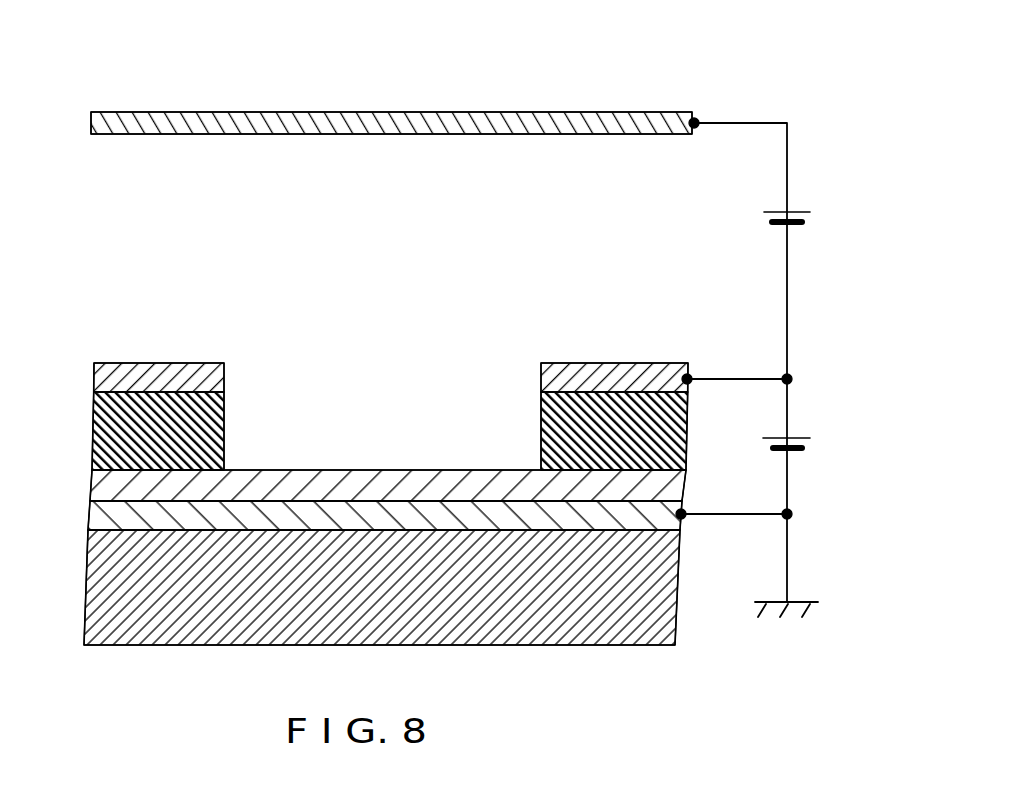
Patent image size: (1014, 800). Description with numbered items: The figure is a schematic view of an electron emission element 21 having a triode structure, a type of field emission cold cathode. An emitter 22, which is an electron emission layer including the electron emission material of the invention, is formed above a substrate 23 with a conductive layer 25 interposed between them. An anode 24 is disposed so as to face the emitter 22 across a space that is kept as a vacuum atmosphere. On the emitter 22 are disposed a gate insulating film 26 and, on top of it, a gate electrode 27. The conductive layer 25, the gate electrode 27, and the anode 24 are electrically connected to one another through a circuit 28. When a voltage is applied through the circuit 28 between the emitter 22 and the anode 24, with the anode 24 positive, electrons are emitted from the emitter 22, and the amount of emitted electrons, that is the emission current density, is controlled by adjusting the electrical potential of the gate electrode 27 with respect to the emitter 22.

The electron emission element 21 is at (738, 88).
The emitter 22 is at (110, 489).
The substrate 23 is at (108, 607).
The anode 24 is at (100, 128).
The conductive layer 25 is at (110, 523).
The gate insulating film 26 is at (104, 435).
The gate electrode 27 is at (112, 382).
The circuit 28 is at (787, 313).